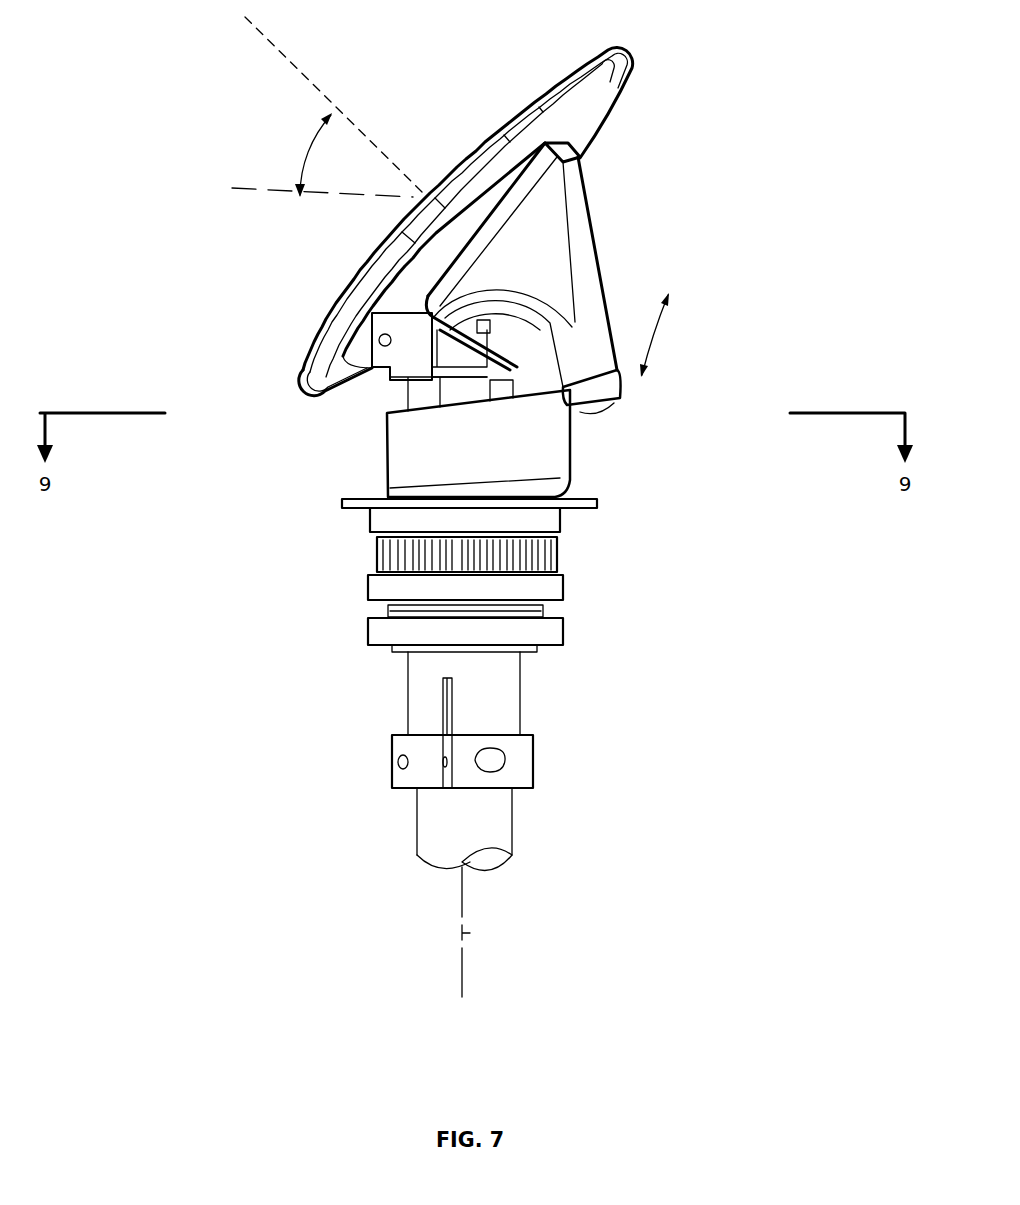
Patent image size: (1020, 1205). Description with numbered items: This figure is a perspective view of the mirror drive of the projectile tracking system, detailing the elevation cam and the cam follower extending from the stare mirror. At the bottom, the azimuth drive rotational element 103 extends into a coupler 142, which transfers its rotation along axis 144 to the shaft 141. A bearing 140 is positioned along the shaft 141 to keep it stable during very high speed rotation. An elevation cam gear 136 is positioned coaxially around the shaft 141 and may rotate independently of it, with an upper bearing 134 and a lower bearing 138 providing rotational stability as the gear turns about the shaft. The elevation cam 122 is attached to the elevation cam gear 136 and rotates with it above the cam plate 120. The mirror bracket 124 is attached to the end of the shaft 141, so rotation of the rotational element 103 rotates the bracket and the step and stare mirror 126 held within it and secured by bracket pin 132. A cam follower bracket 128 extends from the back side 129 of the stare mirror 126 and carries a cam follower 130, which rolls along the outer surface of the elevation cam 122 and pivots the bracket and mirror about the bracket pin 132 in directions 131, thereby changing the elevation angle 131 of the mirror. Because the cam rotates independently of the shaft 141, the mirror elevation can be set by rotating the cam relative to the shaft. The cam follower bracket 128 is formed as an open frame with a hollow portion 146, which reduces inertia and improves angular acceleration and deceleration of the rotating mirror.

The rotational element 103 is at (418, 823).
The cam plate 120 is at (352, 504).
The elevation cam 122 is at (558, 455).
The mirror bracket 124 is at (410, 357).
The step and stare mirror 126 is at (483, 137).
The cam follower bracket 128 is at (591, 268).
The back side 129 is at (598, 102).
The cam follower 130 is at (636, 388).
The elevation angle 131 is at (304, 148).
The bracket pin 132 is at (379, 338).
The upper bearing 134 is at (566, 517).
The elevation cam gear 136 is at (378, 556).
The lower bearing 138 is at (549, 592).
The bearing 140 is at (554, 633).
The shaft 141 is at (509, 706).
The coupler 142 is at (526, 765).
The axis 144 is at (470, 933).
The hollow portion 146 is at (546, 243).